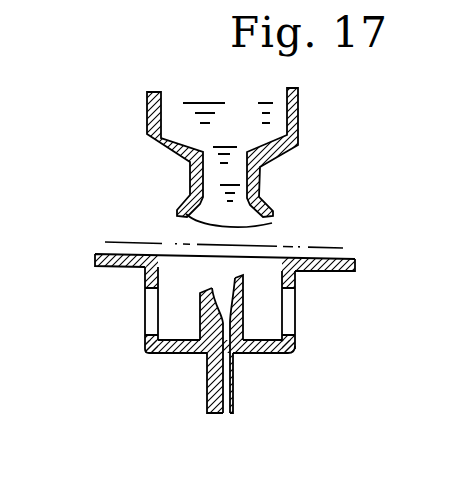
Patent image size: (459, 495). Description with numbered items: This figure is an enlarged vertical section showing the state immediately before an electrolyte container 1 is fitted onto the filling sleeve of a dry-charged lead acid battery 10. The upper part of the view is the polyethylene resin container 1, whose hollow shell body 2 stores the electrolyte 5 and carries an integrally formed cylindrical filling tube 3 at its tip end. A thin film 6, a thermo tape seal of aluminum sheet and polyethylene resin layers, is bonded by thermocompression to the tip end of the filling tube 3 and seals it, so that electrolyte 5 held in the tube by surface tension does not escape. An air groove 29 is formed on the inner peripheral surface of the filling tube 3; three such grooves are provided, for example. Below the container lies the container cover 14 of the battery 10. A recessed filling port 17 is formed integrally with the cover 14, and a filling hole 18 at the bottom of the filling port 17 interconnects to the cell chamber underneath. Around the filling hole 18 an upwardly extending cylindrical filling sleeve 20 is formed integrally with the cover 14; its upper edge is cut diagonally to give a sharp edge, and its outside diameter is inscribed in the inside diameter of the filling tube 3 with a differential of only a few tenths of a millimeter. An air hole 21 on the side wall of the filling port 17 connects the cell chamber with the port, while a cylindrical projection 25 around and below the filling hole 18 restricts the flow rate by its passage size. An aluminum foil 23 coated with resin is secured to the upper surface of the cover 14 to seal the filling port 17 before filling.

The electrolyte container 1 is at (232, 140).
The shell body 2 is at (147, 117).
The filling tube 3 is at (190, 173).
The electrolyte 5 is at (230, 112).
The thin film 6 is at (280, 222).
The air groove 29 is at (256, 184).
The aluminum foil 23 is at (157, 242).
The container cover 14 is at (198, 242).
The dry-charged lead acid battery 10 is at (114, 252).
The filling port 17 is at (237, 335).
The air hole 21 is at (153, 308).
The filling sleeve 20 is at (230, 364).
The cylindrical projection 25 is at (206, 384).
The filling hole 18 is at (219, 413).